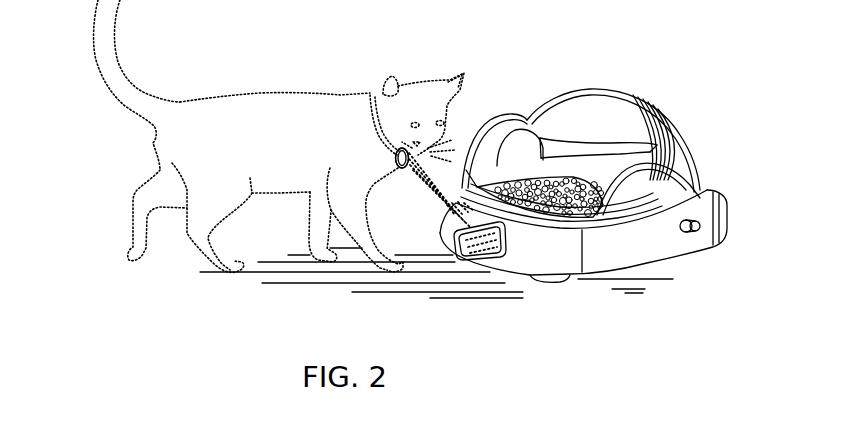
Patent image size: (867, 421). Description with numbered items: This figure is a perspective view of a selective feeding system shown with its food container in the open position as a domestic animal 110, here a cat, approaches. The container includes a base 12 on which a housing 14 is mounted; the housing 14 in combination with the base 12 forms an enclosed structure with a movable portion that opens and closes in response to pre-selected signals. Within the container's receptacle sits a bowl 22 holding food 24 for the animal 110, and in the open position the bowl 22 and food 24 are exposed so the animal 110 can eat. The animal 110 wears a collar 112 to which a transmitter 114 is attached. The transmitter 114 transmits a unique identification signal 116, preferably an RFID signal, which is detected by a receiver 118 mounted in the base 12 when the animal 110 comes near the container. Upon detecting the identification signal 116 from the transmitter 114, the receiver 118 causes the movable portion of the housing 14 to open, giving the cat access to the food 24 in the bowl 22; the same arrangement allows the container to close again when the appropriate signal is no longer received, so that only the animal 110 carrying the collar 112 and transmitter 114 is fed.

The base 12 is at (668, 253).
The housing 14 is at (690, 175).
The bowl 22 is at (515, 185).
The food 24 is at (572, 191).
The domestic animal 110 is at (283, 100).
The collar 112 is at (370, 97).
The transmitter 114 is at (404, 168).
The identification signal 116 is at (441, 190).
The receiver 118 is at (467, 243).